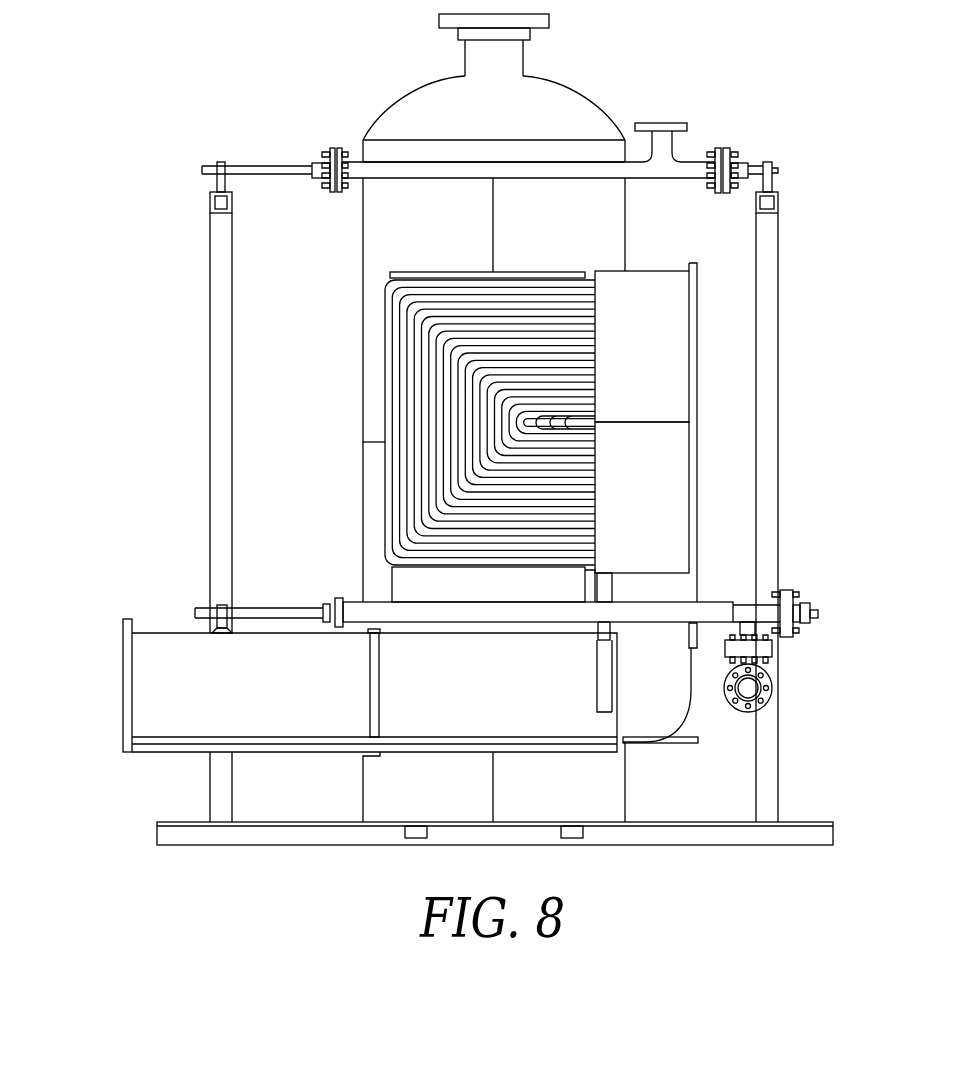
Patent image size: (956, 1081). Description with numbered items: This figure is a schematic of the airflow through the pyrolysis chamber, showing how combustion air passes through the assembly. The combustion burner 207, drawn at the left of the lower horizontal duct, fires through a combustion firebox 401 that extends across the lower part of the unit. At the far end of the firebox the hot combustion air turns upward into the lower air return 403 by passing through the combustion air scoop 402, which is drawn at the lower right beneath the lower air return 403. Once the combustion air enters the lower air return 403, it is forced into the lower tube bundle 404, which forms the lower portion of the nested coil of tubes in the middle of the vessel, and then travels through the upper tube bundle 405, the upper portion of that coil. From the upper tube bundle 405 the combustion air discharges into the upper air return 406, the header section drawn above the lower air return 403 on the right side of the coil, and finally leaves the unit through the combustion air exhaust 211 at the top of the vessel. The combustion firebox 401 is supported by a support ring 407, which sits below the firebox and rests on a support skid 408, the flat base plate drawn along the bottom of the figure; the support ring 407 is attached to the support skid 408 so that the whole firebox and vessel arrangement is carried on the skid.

The combustion air exhaust 211 is at (658, 256).
The upper tube bundle 405 is at (403, 358).
The lower tube bundle 404 is at (403, 495).
The upper air return 406 is at (668, 335).
The lower air return 403 is at (668, 487).
The combustion air scoop 402 is at (668, 704).
The combustion burner 207 is at (122, 687).
The combustion firebox 401 is at (185, 725).
The support ring 407 is at (570, 795).
The support skid 408 is at (327, 832).